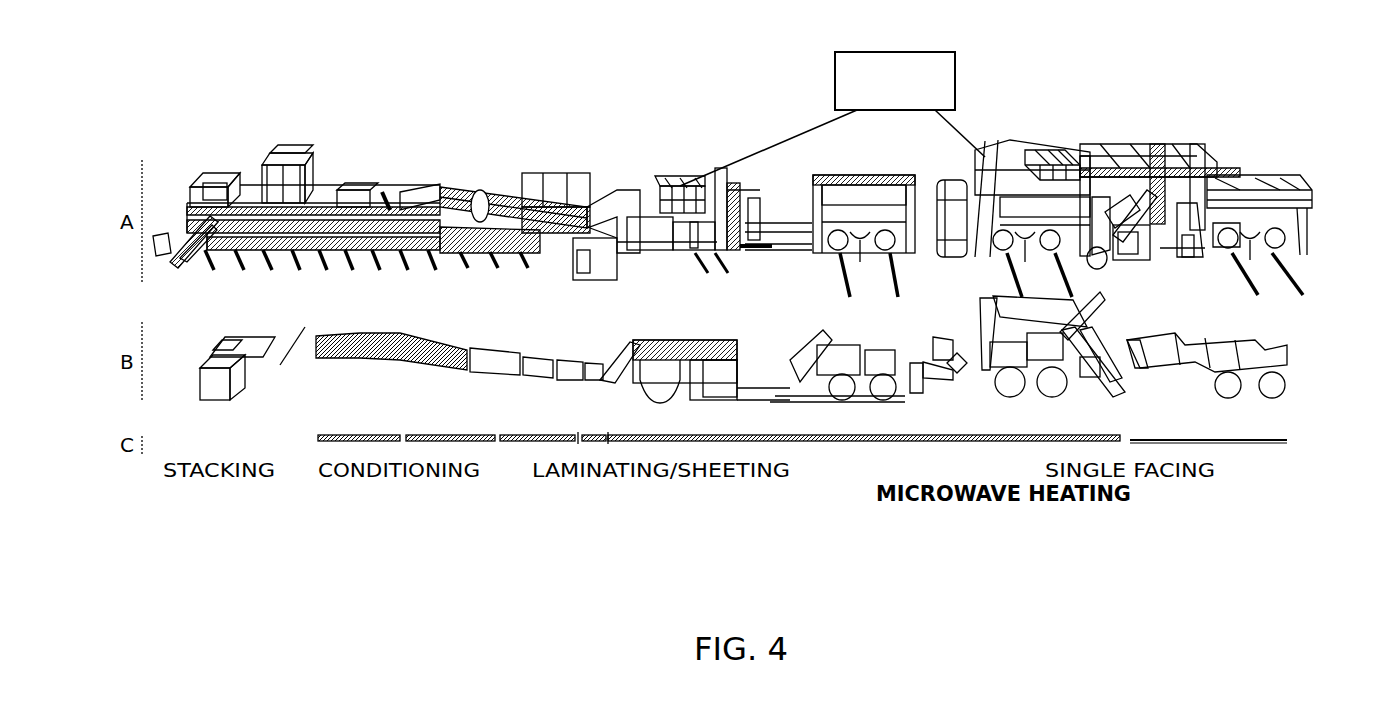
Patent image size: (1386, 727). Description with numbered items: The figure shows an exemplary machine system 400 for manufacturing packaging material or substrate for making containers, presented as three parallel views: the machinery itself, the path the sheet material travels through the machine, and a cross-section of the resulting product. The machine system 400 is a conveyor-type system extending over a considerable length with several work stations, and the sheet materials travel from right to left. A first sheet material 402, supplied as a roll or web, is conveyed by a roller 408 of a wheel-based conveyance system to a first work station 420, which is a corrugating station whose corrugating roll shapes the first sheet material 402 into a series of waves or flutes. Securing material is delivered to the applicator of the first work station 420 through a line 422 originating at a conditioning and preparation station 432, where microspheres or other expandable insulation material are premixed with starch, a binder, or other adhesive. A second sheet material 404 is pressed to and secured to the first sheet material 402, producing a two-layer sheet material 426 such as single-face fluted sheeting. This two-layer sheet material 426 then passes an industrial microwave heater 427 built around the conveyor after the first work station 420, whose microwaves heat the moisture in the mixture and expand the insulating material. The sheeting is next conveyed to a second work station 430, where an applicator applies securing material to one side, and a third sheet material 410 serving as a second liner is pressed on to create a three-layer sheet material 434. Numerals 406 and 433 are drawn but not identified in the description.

The machine system 400 is at (1308, 270).
The first sheet material 402 is at (1185, 324).
The second sheet material 404 is at (1130, 424).
The single facer roll 406 is at (1295, 230).
The roller 408 is at (1152, 380).
The third sheet material 410 is at (358, 440).
The first work station 420 is at (1128, 176).
The line 422 is at (972, 122).
The two-layer sheet material 426 is at (843, 455).
The industrial microwave heater 427 is at (694, 168).
The second work station 430 is at (648, 163).
The conditioning and preparation station 432 is at (826, 48).
The control line 433 is at (784, 128).
The three-layer sheet material 434 is at (314, 460).